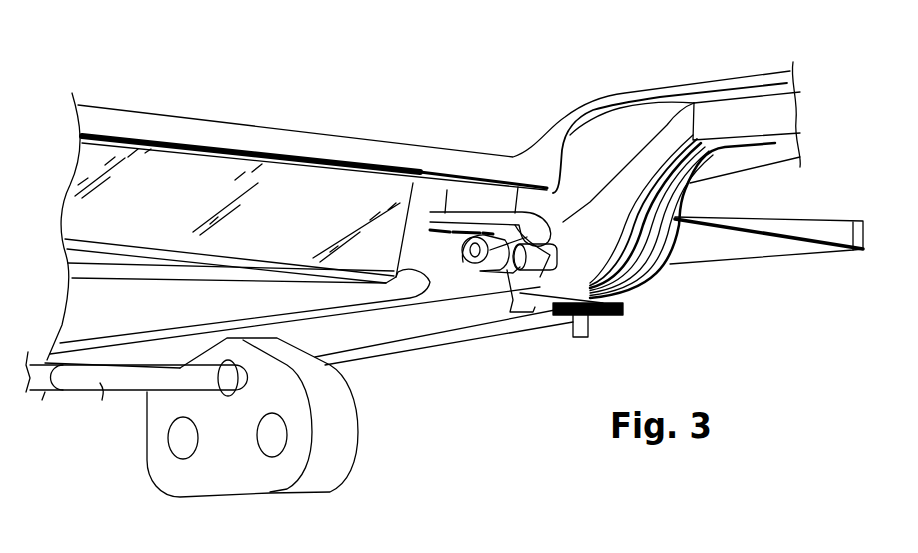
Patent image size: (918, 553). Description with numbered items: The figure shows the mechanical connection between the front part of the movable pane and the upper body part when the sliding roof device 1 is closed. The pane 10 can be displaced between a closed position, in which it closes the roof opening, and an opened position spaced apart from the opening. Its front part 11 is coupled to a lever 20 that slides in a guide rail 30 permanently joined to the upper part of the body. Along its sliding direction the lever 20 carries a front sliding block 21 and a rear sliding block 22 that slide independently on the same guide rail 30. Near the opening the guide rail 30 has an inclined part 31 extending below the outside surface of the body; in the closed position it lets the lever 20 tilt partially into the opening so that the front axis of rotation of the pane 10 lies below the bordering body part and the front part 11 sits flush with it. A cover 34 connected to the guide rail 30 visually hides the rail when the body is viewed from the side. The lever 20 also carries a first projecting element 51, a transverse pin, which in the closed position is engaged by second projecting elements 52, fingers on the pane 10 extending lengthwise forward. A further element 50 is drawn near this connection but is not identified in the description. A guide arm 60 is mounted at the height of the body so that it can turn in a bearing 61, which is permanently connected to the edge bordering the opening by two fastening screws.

The sliding roof device 1 is at (432, 104).
The pane 10 is at (320, 133).
The front part 11 is at (203, 114).
The lever 20 is at (622, 142).
The front sliding block 21 is at (708, 100).
The rear sliding block 22 is at (673, 253).
The guide rail 30 is at (657, 290).
The inclined part 31 is at (694, 200).
The cover 34 is at (752, 80).
The retaining clip 50 is at (562, 243).
The first projecting element 51 is at (550, 272).
The second projecting elements 52 is at (470, 262).
The guide arm 60 is at (104, 378).
The bearing 61 is at (332, 436).